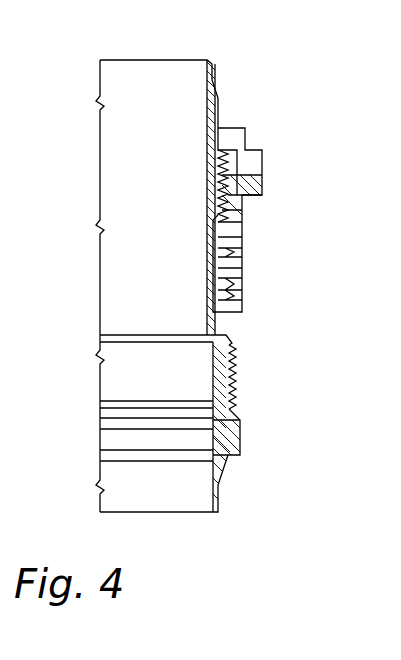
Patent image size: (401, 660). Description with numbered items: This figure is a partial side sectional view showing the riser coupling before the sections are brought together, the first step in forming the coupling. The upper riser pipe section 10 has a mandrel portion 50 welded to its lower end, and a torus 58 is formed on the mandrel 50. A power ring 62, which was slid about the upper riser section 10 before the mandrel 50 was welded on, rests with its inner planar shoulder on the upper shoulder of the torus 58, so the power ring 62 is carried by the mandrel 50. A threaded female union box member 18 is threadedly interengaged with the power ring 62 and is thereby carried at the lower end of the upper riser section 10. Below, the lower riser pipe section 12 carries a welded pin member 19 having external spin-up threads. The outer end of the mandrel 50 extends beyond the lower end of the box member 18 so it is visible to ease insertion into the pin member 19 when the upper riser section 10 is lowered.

The upper riser pipe section 10 is at (224, 62).
The power ring 62 is at (229, 127).
The torus 58 is at (228, 201).
The union box member 18 is at (216, 231).
The mandrel portion 50 is at (218, 268).
The pin member 19 is at (235, 443).
The lower riser pipe section 12 is at (216, 509).